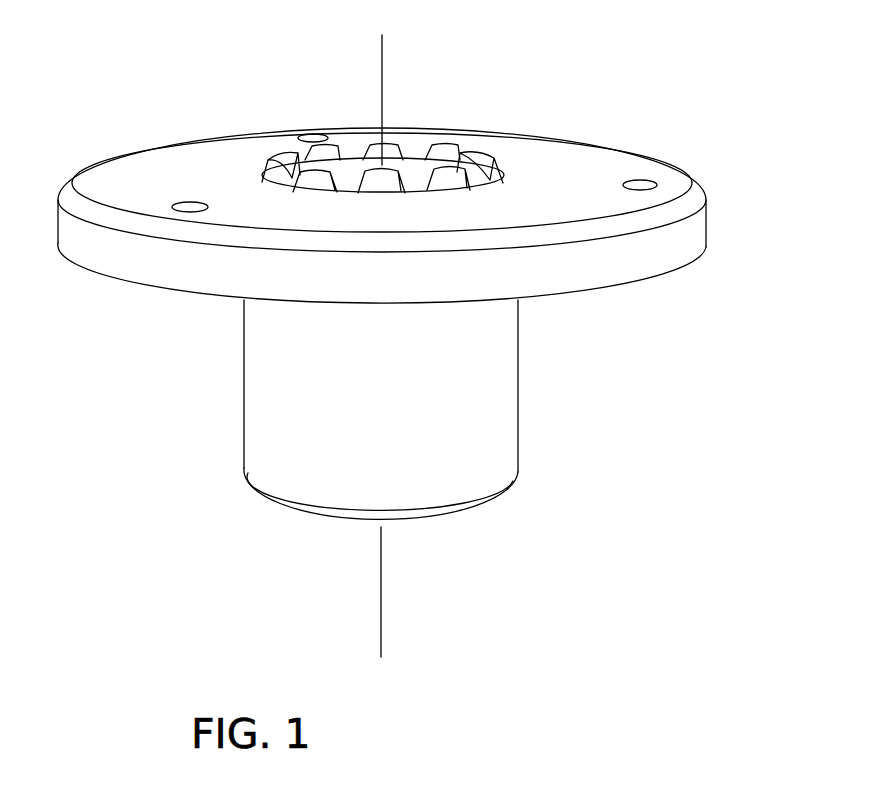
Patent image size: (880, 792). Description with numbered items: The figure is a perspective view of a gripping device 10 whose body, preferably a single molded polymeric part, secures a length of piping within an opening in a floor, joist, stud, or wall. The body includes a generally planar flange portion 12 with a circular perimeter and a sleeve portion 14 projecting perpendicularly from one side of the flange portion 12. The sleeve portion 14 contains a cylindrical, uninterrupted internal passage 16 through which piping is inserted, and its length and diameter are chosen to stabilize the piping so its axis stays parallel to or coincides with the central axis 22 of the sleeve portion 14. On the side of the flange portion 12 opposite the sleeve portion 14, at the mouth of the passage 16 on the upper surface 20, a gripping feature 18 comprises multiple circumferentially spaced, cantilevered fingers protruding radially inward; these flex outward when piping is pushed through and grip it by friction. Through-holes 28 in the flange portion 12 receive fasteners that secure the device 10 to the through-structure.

The gripping device 10 is at (621, 78).
The flange portion 12 is at (653, 263).
The sleeve portion 14 is at (503, 412).
The internal passage 16 is at (357, 170).
The gripping feature 18 is at (487, 165).
The upper surface 20 is at (208, 163).
The central axis 22 is at (382, 66).
The through-holes 28 is at (645, 183).